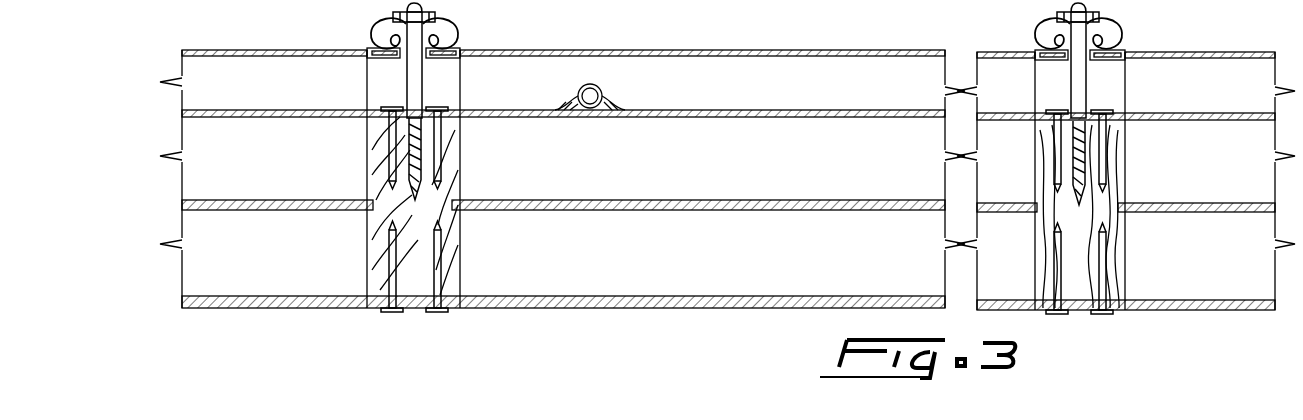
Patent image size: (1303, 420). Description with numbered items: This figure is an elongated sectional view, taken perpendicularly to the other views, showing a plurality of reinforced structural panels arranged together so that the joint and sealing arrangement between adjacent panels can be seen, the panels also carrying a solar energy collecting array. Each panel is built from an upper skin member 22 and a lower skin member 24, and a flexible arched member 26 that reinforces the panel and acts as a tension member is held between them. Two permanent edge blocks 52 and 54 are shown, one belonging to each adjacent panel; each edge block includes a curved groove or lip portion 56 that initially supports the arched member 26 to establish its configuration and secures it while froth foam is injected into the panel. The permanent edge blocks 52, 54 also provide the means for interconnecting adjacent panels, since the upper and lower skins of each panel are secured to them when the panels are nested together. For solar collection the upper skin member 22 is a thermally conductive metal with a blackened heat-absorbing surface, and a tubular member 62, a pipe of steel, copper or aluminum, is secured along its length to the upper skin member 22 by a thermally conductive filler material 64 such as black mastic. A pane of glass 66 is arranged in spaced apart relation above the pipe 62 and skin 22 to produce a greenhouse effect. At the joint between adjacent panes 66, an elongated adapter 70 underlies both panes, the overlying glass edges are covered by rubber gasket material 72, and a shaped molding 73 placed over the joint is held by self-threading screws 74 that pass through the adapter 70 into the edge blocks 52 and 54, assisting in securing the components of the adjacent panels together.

The upper skin member 22 is at (321, 117).
The lower skin member 24 is at (332, 296).
The flexible arched member 26 is at (314, 200).
The permanent edge block 52 is at (448, 160).
The permanent edge block 54 is at (1042, 149).
The curved groove 56 is at (456, 201).
The tubular member 62 is at (603, 88).
The thermally conductive filler material 64 is at (576, 95).
The pane of glass 66 is at (886, 50).
The elongated adapter 70 is at (461, 94).
The gasket 72 is at (392, 58).
The molding 73 is at (374, 27).
The self-threading screw 74 is at (436, 16).